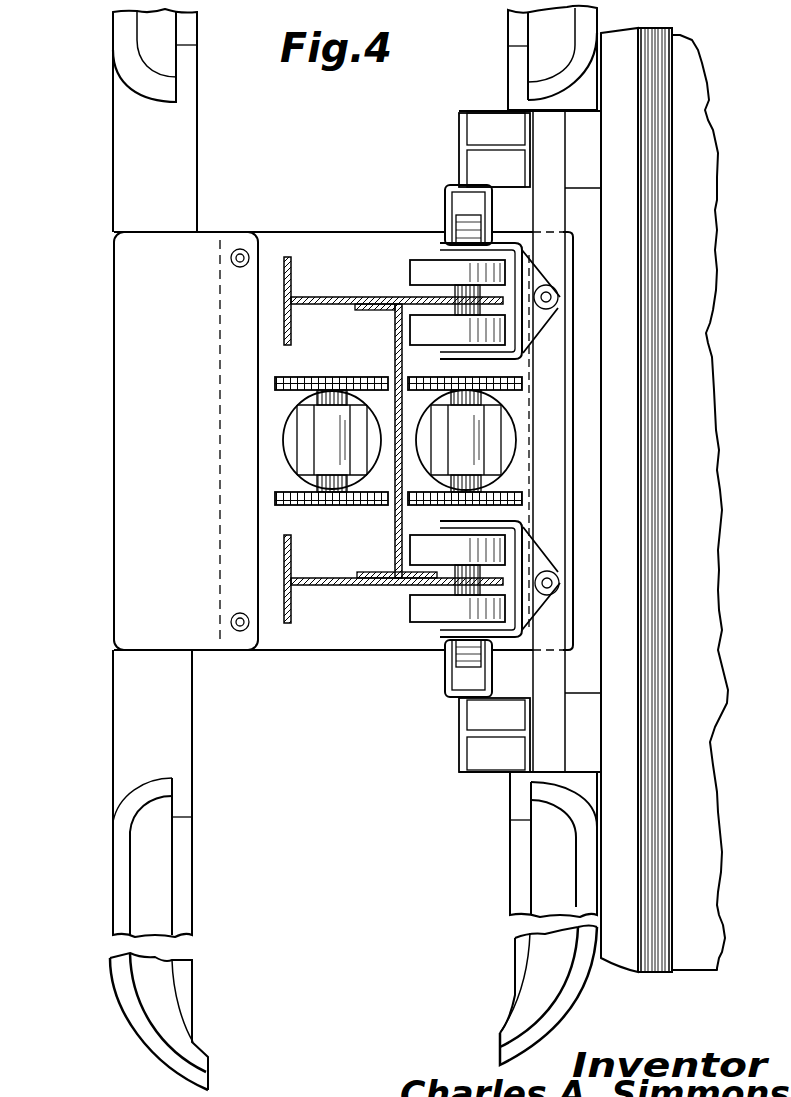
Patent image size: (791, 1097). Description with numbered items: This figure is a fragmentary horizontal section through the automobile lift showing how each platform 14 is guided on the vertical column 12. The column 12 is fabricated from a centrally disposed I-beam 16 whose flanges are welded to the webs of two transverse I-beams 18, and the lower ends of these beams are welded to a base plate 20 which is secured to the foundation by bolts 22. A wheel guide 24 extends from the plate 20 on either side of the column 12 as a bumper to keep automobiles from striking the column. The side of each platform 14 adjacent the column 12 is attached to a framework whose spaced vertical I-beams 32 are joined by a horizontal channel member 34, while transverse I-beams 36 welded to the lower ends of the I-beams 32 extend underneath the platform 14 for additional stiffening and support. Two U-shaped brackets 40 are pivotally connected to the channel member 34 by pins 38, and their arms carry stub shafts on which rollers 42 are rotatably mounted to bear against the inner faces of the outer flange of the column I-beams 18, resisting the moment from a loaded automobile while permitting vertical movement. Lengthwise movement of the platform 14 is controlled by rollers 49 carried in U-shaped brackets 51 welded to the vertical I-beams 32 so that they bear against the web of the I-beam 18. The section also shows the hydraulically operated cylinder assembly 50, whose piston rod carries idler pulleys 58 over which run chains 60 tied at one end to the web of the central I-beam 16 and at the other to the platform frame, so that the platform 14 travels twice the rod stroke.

The vertical column 12 is at (300, 634).
The platform 14 is at (676, 564).
The centrally disposed I-beam 16 is at (397, 528).
The transverse I-beam 18 is at (332, 283).
The base plate 20 is at (128, 584).
The bolt 22 is at (242, 250).
The wheel guide 24 is at (115, 52).
The vertical I-beam 32 is at (462, 128).
The horizontal channel member 34 is at (560, 512).
The transverse I-beam 36 is at (592, 168).
The pin 38 is at (559, 297).
The U-shaped bracket 40 is at (537, 326).
The roller 42 is at (457, 265).
The roller 49 is at (468, 222).
The hydraulically operated cylinder assembly 50 is at (290, 442).
The U-shaped bracket 51 is at (447, 184).
The idler pulley 58 is at (395, 370).
The chain 60 is at (276, 382).